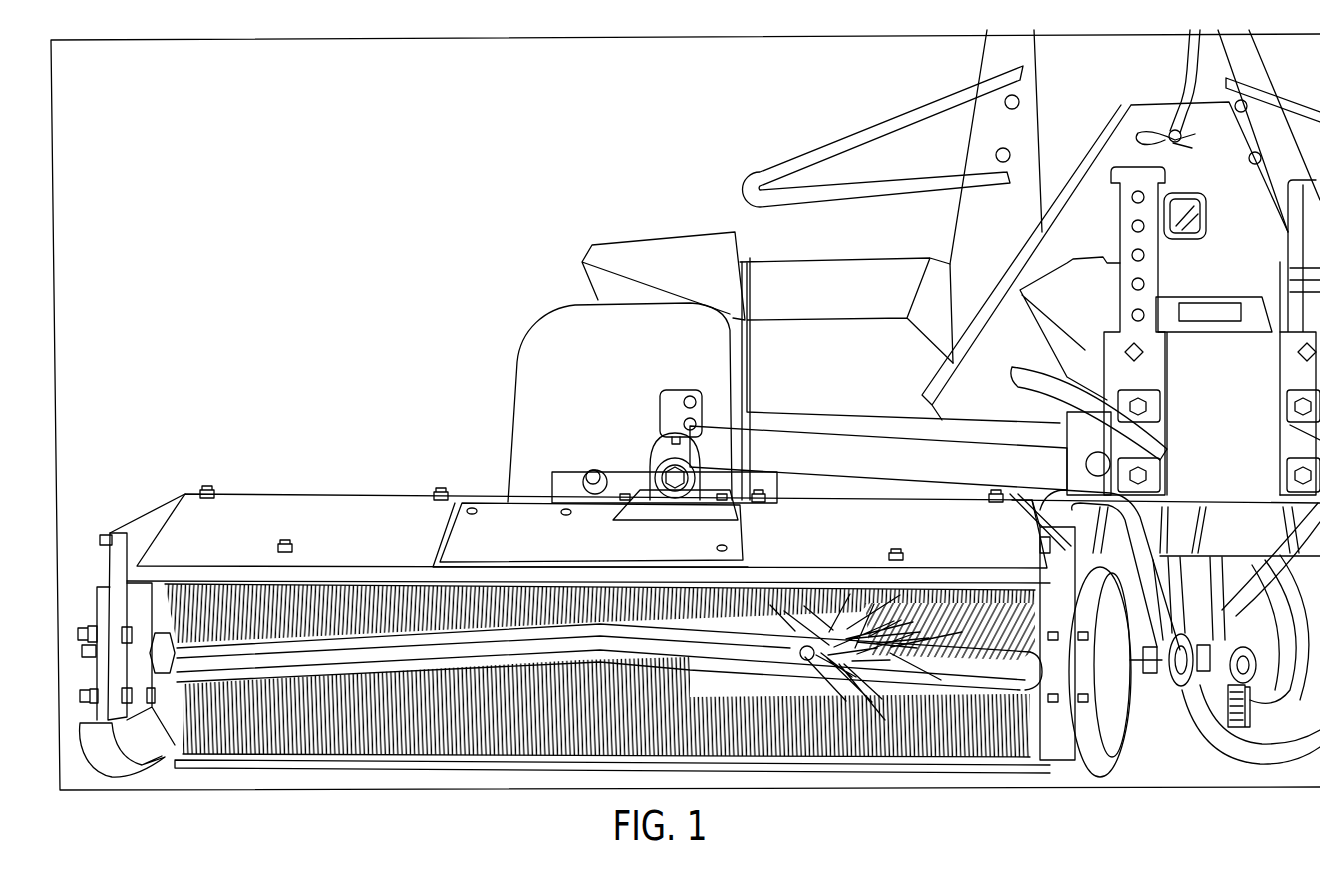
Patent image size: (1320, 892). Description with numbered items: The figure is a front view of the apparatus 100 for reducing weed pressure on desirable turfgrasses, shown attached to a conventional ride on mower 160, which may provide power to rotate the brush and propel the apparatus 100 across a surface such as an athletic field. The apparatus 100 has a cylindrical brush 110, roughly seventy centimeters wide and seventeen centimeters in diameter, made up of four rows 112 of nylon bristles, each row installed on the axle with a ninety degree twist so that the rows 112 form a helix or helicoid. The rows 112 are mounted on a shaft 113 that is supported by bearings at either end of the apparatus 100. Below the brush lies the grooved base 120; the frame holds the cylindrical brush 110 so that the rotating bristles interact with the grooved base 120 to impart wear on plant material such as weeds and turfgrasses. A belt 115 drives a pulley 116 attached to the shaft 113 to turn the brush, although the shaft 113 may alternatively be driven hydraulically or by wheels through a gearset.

The apparatus 100 is at (393, 490).
The cylindrical brush 110 is at (170, 735).
The rows of brushes 112 is at (198, 667).
The shaft 113 is at (357, 657).
The belt 115 is at (1100, 760).
The pulley 116 is at (1130, 730).
The grooved base 120 is at (367, 767).
The ride on mower 160 is at (650, 240).